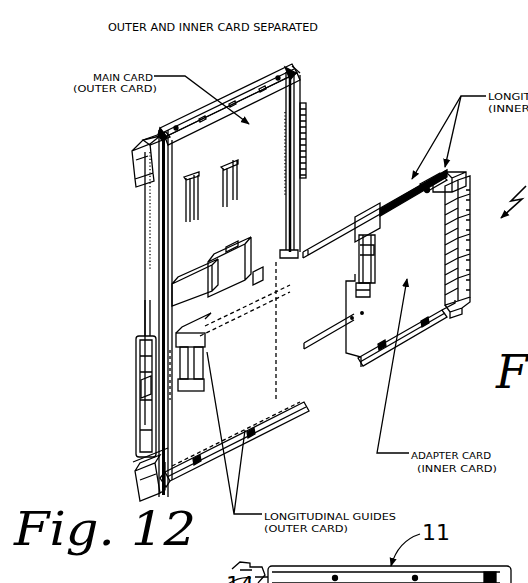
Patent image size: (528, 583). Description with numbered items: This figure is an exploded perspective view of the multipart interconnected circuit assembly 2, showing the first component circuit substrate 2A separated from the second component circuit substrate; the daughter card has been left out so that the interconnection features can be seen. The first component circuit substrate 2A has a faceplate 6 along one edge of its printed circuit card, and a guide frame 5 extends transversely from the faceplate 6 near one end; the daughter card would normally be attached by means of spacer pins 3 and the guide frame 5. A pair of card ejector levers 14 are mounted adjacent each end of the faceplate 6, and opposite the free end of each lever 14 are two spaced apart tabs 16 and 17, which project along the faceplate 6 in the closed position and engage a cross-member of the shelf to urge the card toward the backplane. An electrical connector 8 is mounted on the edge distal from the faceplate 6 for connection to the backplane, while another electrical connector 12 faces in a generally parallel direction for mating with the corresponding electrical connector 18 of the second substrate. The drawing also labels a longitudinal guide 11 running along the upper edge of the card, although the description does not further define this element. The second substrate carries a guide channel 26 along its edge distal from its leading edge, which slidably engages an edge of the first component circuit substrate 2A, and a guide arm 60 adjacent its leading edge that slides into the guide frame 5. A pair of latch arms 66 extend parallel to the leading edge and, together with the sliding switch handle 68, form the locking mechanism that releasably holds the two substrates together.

The multipart interconnected circuit assembly 2 is at (82, 238).
The first component circuit substrate 2A is at (320, 95).
The spacer pins 3 is at (298, 222).
The guide frame 5 is at (261, 431).
The faceplate 6 is at (147, 315).
The electrical connector 8 is at (305, 143).
The upper longitudinal guide 11 is at (231, 87).
The electrical connector 12 is at (209, 354).
The levers 14 is at (142, 157).
The tab 16 is at (167, 133).
The tab 17 is at (148, 131).
The electrical connector 18 is at (384, 206).
The guide channel 26 is at (421, 188).
The guide arm 60 is at (417, 327).
The latch arms 66 is at (322, 253).
The handle 68 is at (140, 362).